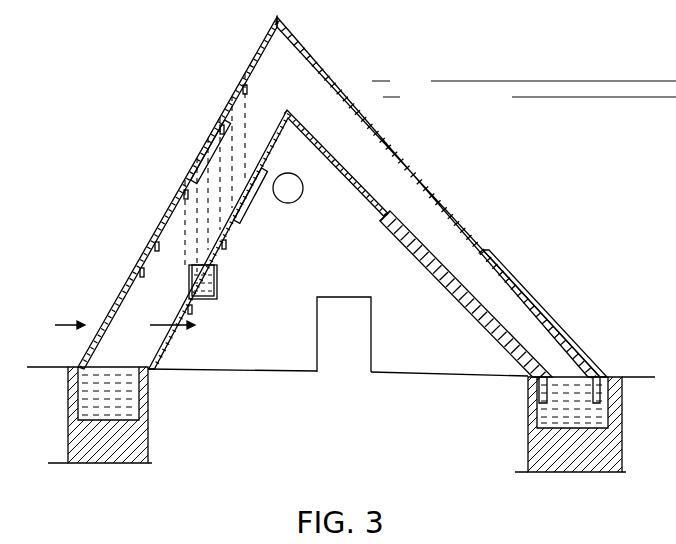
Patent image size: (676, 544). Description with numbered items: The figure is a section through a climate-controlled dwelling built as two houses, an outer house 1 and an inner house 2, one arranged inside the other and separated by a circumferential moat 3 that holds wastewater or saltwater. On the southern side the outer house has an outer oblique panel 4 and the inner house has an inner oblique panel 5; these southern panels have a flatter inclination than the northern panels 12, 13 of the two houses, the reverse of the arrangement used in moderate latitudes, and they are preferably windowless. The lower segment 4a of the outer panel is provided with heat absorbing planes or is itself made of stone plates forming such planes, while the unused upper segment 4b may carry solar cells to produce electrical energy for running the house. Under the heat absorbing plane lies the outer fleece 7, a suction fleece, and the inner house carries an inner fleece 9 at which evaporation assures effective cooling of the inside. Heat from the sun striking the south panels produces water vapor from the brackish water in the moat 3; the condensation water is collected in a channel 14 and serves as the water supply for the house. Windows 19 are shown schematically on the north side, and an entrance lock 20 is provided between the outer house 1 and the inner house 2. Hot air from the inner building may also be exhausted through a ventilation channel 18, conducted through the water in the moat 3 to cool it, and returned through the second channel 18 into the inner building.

The outer house 1 is at (342, 210).
The inner house 2 is at (451, 283).
The moat 3 is at (540, 417).
The outer oblique panel 4 is at (442, 210).
The lower segment 4a is at (503, 259).
The upper segment 4b is at (338, 70).
The inner oblique panel 5 is at (344, 256).
The outer fleece 7 is at (556, 323).
The inner fleece 9 is at (417, 235).
The panel 12 is at (177, 193).
The panel 13 is at (176, 304).
The channel 14 is at (218, 268).
The ventilation channel 18 is at (288, 204).
The windows 19 is at (207, 141).
The entrance lock 20 is at (334, 374).